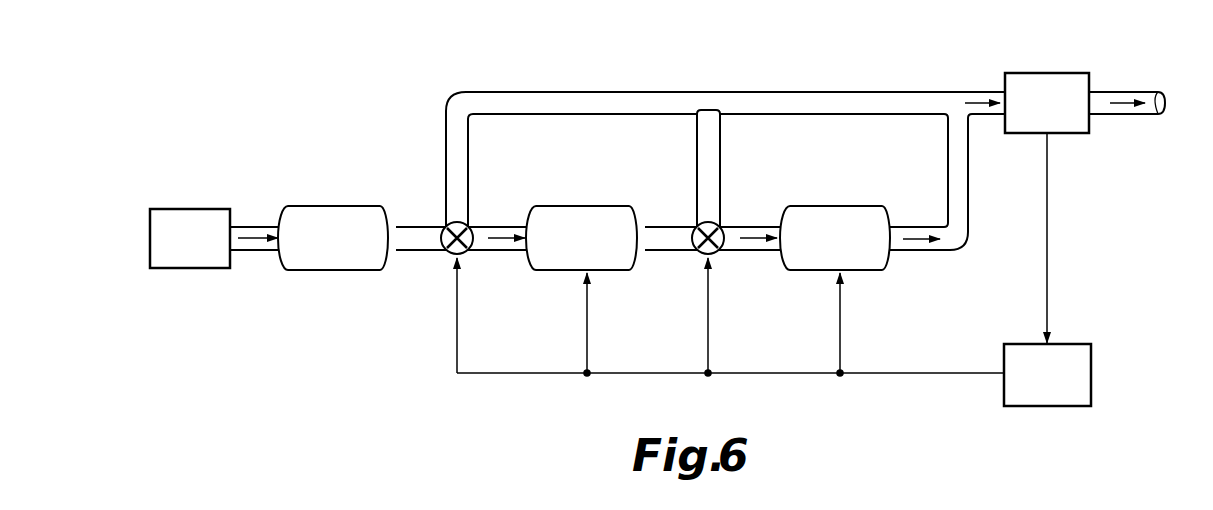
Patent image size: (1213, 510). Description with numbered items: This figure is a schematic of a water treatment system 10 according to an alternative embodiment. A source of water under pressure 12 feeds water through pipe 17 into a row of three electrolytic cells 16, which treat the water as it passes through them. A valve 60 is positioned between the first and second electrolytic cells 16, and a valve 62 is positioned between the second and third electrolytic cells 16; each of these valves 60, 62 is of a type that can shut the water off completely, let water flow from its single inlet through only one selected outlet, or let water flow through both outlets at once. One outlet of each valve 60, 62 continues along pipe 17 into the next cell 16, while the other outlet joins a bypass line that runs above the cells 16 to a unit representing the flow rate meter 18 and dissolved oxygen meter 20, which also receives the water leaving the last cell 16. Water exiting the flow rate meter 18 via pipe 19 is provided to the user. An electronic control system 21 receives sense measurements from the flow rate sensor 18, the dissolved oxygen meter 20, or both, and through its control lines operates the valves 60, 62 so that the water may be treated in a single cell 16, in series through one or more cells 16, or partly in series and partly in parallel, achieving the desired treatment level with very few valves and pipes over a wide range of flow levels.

The exhaust gas treatment system 10 is at (446, 70).
The source of water under pressure 12 is at (187, 209).
The electrolytic cell 16 is at (330, 272).
The pipe 17 is at (498, 252).
The flow rate meter 18 is at (1070, 79).
The dissolved oxygen meter 20 is at (1042, 72).
The pipe 19 is at (1135, 92).
The electronic control system 21 is at (1091, 378).
The valve 60 is at (443, 234).
The valve 62 is at (694, 234).